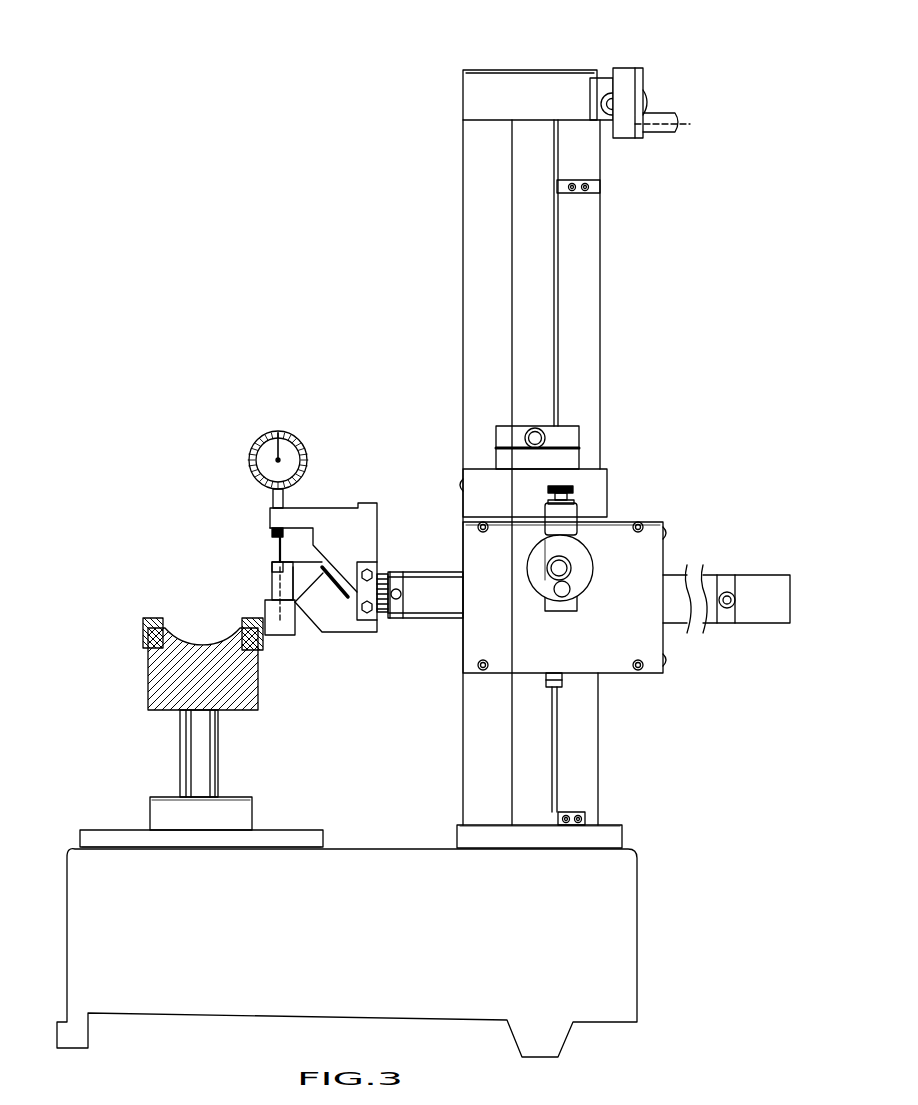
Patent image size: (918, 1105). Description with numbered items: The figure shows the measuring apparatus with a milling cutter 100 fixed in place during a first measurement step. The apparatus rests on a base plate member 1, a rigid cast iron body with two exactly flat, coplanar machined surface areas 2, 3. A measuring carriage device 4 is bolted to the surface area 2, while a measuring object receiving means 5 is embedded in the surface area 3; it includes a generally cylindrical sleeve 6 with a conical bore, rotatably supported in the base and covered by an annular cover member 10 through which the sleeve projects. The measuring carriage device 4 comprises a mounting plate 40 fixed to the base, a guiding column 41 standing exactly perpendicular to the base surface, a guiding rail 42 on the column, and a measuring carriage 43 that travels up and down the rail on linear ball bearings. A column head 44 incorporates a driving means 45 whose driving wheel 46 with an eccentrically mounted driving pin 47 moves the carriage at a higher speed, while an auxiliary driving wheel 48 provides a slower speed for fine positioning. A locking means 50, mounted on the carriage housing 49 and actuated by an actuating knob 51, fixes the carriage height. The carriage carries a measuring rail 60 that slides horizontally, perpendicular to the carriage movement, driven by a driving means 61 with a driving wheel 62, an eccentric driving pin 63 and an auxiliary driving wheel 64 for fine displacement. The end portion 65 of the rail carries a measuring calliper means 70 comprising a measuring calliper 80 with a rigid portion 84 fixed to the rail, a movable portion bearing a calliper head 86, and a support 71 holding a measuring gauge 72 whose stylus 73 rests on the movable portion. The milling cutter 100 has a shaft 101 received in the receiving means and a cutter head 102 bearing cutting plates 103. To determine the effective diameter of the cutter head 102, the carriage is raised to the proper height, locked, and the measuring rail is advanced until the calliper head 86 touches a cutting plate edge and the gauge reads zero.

The base plate member 1 is at (627, 928).
The plainly machined surface area 2 is at (534, 852).
The plainly machined surface area 3 is at (224, 852).
The measuring carriage device 4 is at (679, 413).
The measuring object receiving means 5 is at (291, 808).
The sleeve 6 is at (170, 813).
The annular cover member 10 is at (317, 830).
The mounting plate 40 is at (612, 838).
The guiding column 41 is at (492, 253).
The guiding rail 42 is at (538, 285).
The measuring carriage 43 is at (643, 552).
The column head 44 is at (538, 90).
The driving means 45 is at (665, 99).
The driving wheel 46 is at (641, 72).
The driving pin 47 is at (673, 122).
The auxiliary driving wheel 48 is at (606, 118).
The carriage housing 49 is at (592, 493).
The locking means 50 is at (585, 444).
The actuating knob 51 is at (537, 430).
The measuring rail 60 is at (432, 603).
The driving means 61 is at (530, 592).
The driving wheel 62 is at (580, 582).
The driving pin 63 is at (567, 594).
The auxiliary driving wheel 64 is at (550, 487).
The end portion 65 is at (387, 576).
The measuring calliper means 70 is at (299, 552).
The support 71 is at (363, 507).
The measuring gauge 72 is at (290, 456).
The stylus 73 is at (277, 545).
The measuring calliper 80 is at (337, 640).
The rigid portion 84 is at (363, 628).
The calliper head 86 is at (282, 627).
The milling cutter 100 is at (198, 701).
The shaft 101 is at (200, 760).
The cutter head 102 is at (236, 683).
The cutting plates 103 is at (154, 620).